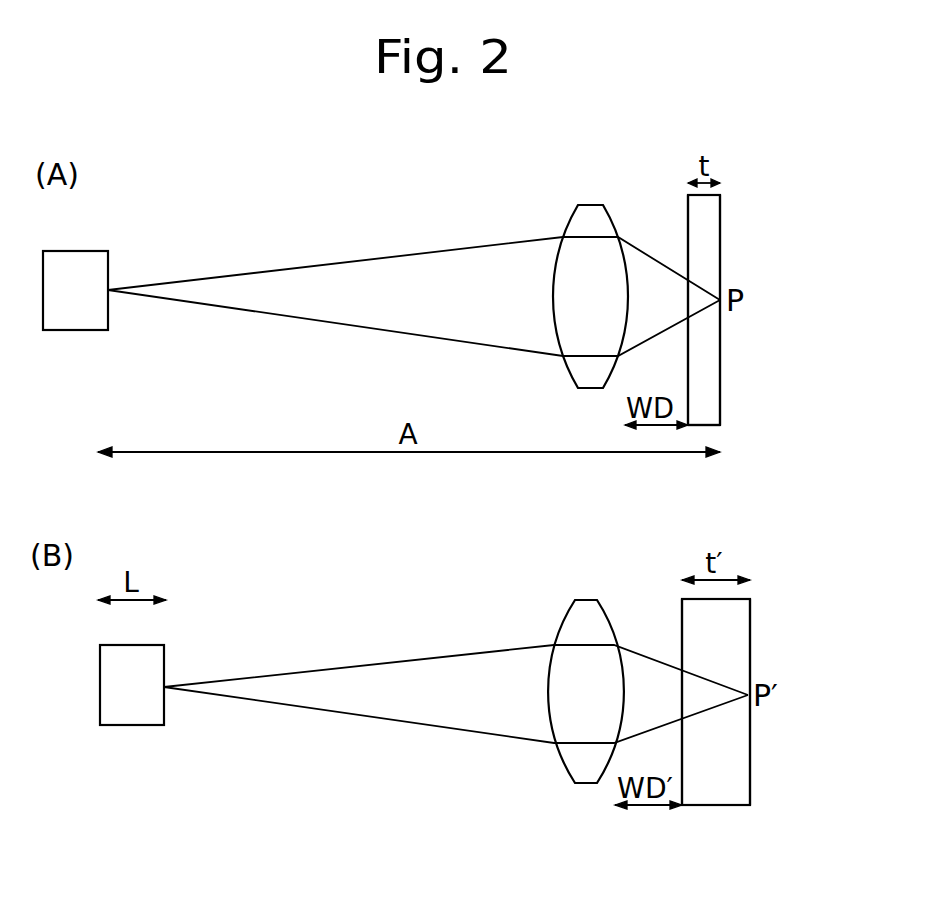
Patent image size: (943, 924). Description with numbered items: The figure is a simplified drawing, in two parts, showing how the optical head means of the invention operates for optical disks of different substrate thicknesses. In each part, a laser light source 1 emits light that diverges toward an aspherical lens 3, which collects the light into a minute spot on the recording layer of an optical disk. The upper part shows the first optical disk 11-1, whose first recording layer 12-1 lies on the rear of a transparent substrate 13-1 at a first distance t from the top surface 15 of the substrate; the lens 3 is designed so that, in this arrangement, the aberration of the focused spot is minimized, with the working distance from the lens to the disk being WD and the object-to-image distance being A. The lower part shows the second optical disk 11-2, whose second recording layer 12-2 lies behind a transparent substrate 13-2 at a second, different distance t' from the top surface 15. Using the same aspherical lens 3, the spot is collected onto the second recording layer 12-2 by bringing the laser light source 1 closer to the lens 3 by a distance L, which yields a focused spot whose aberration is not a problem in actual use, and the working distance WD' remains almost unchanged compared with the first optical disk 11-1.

The laser light source 1 is at (77, 322).
The aspherical lens 3 is at (590, 218).
The top surface 15 is at (688, 222).
The first optical disk 11-1 is at (707, 222).
The first recording layer 12-1 is at (720, 268).
The transparent substrate 13-1 is at (707, 410).
The second optical disk 11-2 is at (720, 797).
The second recording layer 12-2 is at (750, 646).
The transparent substrate 13-2 is at (737, 617).